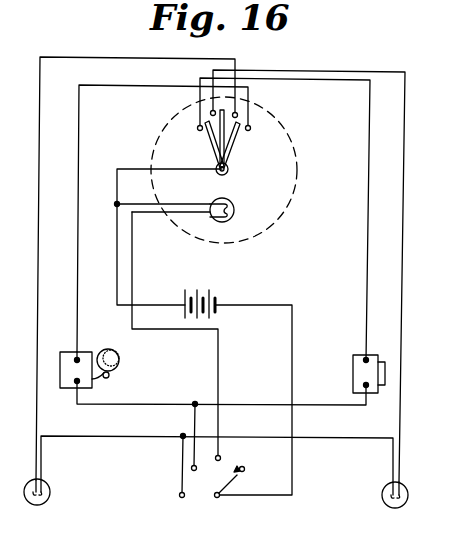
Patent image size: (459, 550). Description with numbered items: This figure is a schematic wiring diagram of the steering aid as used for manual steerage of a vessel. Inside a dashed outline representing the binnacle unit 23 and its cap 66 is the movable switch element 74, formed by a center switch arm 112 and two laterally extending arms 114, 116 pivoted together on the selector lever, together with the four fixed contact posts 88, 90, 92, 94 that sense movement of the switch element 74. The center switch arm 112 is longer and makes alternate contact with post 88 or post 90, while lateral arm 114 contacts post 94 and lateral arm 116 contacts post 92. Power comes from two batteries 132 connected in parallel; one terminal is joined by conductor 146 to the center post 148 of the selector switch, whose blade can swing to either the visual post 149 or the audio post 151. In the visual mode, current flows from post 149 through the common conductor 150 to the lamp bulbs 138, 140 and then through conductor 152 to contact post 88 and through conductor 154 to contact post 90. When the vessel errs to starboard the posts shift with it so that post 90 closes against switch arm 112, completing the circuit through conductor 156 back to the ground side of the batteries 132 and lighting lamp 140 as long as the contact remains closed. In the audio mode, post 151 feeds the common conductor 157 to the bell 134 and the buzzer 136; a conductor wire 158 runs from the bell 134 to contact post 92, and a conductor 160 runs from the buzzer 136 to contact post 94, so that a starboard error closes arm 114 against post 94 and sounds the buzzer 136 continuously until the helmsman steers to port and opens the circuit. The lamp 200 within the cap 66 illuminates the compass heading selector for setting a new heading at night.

The binnacle unit 23 is at (262, 232).
The cap 66 is at (299, 204).
The switch element 74 is at (246, 127).
The contact post 88 is at (238, 113).
The contact post 90 is at (210, 110).
The contact post 92 is at (250, 128).
The contact post 94 is at (199, 128).
The center switch arm 112 is at (227, 132).
The lateral arm 114 is at (213, 144).
The lateral arm 116 is at (234, 148).
The batteries 132 is at (202, 290).
The bell 134 is at (88, 357).
The buzzer 136 is at (353, 375).
The lamp bulb 138 is at (48, 498).
The lamp bulb 140 is at (384, 498).
The conductor 146 is at (250, 305).
The center post 148 is at (216, 498).
The post 149 is at (180, 495).
The common conductor 150 is at (96, 420).
The post 151 is at (191, 468).
The conductor 152 is at (124, 58).
The conductor 154 is at (368, 70).
The conductor 156 is at (142, 168).
The common conductor 157 is at (277, 404).
The conductor wire 158 is at (78, 233).
The conductor 160 is at (366, 293).
The lamp 200 is at (246, 198).